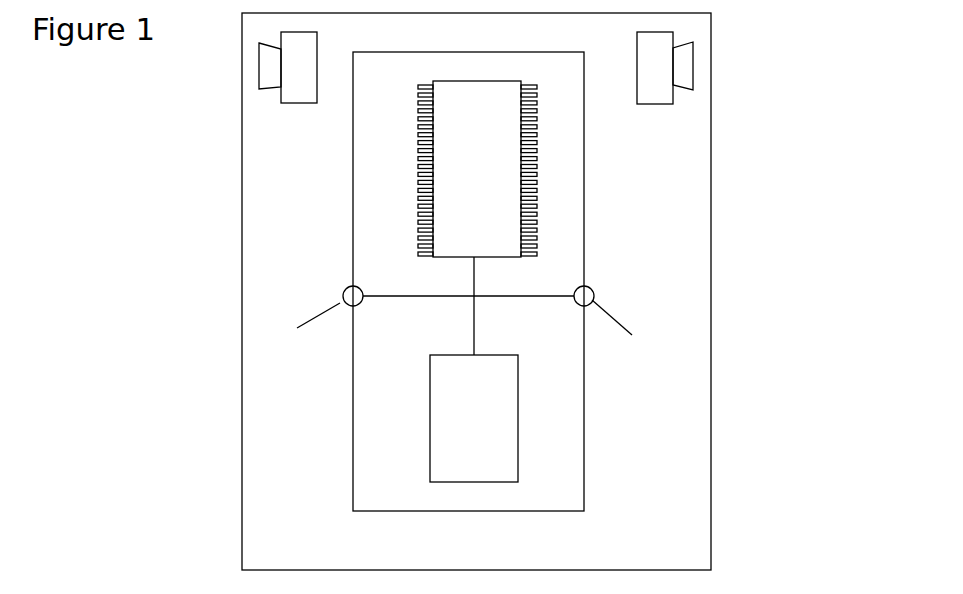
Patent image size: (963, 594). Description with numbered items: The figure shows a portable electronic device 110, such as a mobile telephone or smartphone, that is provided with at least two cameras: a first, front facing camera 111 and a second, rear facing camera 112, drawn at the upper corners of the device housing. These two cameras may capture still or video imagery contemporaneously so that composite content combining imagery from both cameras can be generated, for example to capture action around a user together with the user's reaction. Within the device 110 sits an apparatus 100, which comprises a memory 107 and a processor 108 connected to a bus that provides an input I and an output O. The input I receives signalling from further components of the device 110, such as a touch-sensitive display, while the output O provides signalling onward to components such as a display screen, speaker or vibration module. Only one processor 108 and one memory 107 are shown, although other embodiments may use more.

The apparatus 100 is at (406, 339).
The memory 107 is at (482, 405).
The processor 108 is at (483, 152).
The portable electronic device 110 is at (762, 140).
The first, front facing camera 111 is at (259, 67).
The second, rear facing camera 112 is at (693, 65).